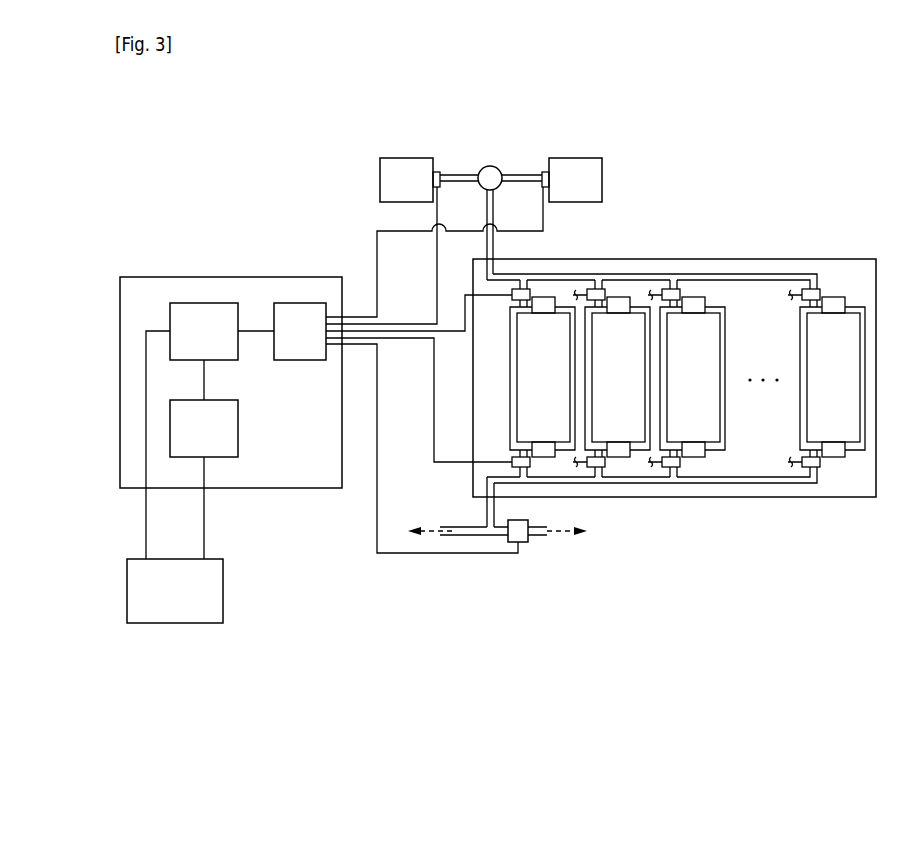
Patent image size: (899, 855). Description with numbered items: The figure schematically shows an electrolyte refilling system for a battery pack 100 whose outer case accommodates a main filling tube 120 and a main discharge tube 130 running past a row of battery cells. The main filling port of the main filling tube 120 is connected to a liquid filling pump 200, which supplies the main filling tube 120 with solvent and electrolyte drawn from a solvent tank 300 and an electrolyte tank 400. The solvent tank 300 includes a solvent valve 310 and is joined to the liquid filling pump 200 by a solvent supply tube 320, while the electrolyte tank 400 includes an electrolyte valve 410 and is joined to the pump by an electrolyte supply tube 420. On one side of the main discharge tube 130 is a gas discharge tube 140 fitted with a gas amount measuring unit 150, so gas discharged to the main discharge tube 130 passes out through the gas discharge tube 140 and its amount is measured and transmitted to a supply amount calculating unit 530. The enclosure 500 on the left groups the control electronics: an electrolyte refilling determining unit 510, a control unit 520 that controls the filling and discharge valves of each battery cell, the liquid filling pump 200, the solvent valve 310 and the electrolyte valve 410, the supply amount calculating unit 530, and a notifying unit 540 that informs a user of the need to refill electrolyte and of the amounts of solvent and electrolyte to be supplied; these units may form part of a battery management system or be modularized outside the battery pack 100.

The battery pack 100 is at (770, 259).
The main filling tube 120 is at (715, 274).
The main discharge tube 130 is at (699, 483).
The gas discharge tube 140 is at (537, 523).
The gas amount measuring unit 150 is at (525, 542).
The liquid filling pump 200 is at (490, 166).
The solvent tank 300 is at (602, 178).
The solvent valve 310 is at (546, 165).
The solvent supply tube 320 is at (523, 175).
The electrolyte tank 400 is at (380, 178).
The electrolyte valve 410 is at (437, 165).
The electrolyte supply tube 420 is at (460, 175).
The control unit 500 is at (293, 488).
The electrolyte refilling determining unit 510 is at (206, 303).
The control unit 520 is at (298, 303).
The supply amount calculating unit 530 is at (238, 429).
The notifying unit 540 is at (175, 623).